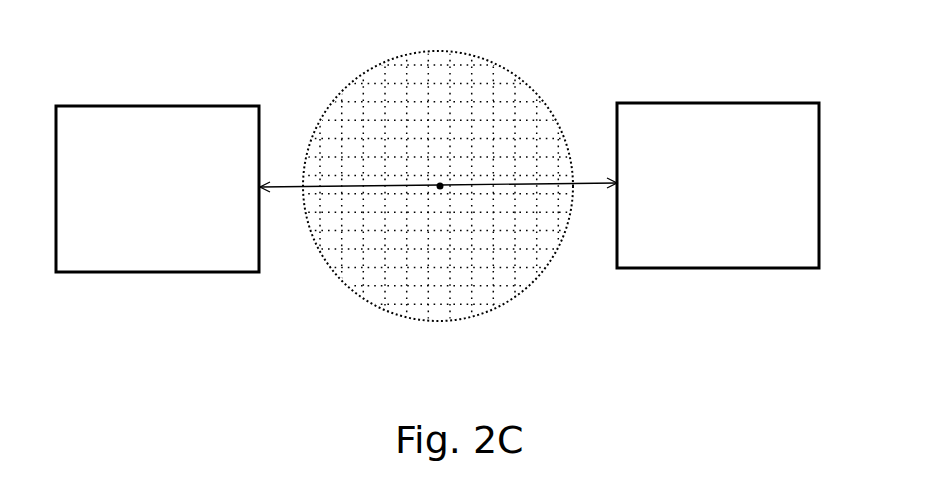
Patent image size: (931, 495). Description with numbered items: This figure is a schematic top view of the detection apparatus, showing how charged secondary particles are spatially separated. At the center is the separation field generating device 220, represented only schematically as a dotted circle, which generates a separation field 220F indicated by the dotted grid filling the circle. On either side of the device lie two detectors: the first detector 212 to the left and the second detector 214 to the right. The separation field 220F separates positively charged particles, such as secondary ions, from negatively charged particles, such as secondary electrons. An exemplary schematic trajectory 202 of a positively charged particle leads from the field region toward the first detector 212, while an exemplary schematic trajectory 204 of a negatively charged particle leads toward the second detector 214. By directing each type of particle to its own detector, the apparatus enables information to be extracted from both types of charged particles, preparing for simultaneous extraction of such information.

The trajectory of a positively charged particle 202 is at (282, 183).
The trajectory of a negatively charged particle 204 is at (592, 180).
The first detector 212 is at (110, 257).
The second detector 214 is at (767, 252).
The separation field generating device 220 is at (345, 92).
The separation field 220F is at (343, 267).